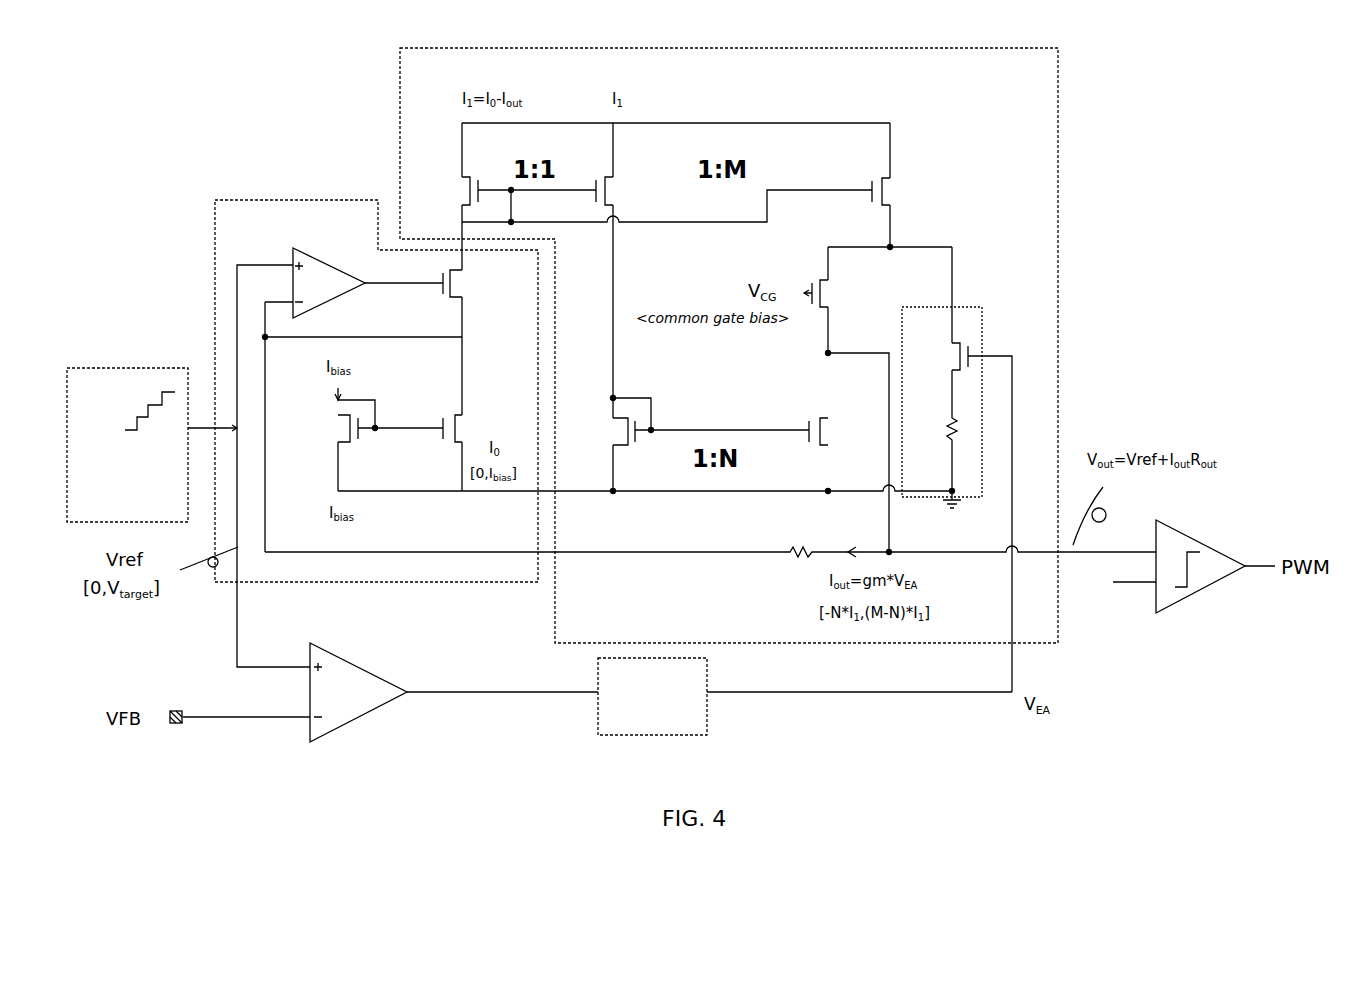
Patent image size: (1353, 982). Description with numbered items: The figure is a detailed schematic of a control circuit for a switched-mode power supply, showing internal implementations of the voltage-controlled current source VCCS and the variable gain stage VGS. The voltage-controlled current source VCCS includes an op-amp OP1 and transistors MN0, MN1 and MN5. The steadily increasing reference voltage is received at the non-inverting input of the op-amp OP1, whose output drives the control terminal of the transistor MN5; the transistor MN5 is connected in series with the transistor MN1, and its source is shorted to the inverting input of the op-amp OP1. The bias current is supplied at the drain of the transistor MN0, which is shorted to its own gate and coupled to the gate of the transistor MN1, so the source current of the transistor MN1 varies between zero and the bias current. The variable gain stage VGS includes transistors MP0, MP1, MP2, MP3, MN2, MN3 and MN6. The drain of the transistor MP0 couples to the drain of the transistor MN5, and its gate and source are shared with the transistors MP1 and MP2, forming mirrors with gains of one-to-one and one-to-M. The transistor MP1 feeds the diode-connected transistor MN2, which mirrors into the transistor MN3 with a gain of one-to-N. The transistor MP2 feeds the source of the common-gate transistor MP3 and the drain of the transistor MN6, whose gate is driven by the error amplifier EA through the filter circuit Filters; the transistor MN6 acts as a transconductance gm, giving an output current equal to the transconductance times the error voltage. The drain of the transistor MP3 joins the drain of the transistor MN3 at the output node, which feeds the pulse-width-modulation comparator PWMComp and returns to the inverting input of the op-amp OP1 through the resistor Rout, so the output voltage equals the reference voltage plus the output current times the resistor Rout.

The variable gain stage VGS is at (729, 345).
The voltage-controlled current source VCCS is at (376, 391).
The filter circuit Filters is at (652, 696).
The transconductance gm is at (973, 317).
The op-amp OP1 is at (368, 285).
The transistor MN5 is at (472, 283).
The transistor MP0 is at (504, 191).
The transistor MP1 is at (628, 191).
The transistor MP2 is at (905, 191).
The transistor MP3 is at (838, 293).
The transistor MN6 is at (958, 517).
The transistor MN2 is at (690, 431).
The transistor MN3 is at (843, 424).
The transistor MN0 is at (368, 428).
The transistor MN1 is at (474, 425).
The resistor Rout is at (710, 535).
The EA module EA is at (661, 697).
The PWM comparator module PWMComp is at (1194, 586).